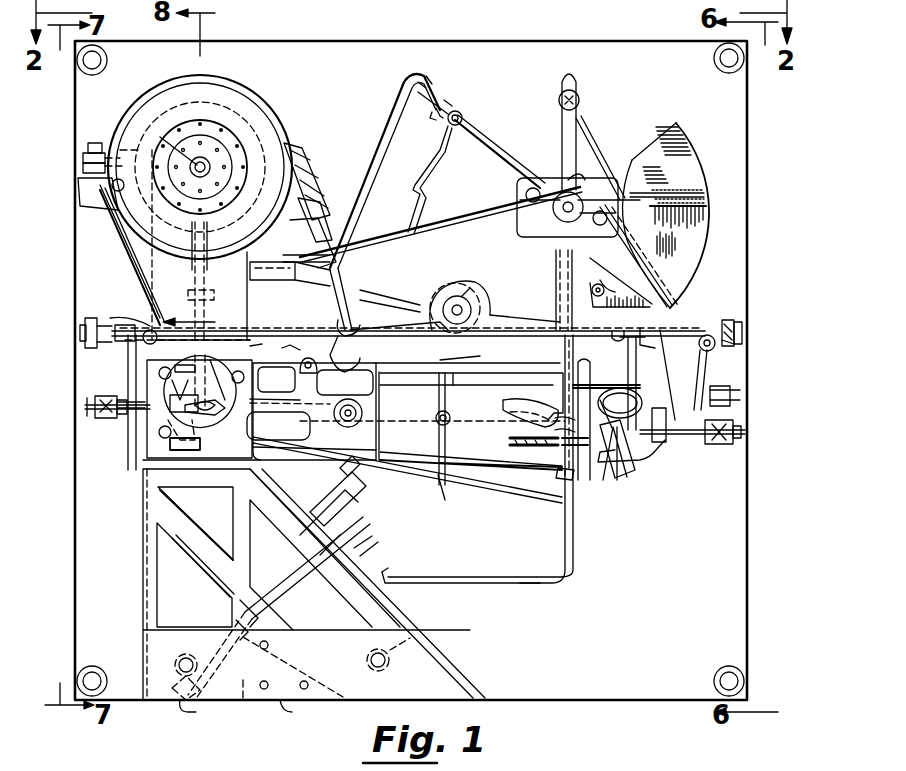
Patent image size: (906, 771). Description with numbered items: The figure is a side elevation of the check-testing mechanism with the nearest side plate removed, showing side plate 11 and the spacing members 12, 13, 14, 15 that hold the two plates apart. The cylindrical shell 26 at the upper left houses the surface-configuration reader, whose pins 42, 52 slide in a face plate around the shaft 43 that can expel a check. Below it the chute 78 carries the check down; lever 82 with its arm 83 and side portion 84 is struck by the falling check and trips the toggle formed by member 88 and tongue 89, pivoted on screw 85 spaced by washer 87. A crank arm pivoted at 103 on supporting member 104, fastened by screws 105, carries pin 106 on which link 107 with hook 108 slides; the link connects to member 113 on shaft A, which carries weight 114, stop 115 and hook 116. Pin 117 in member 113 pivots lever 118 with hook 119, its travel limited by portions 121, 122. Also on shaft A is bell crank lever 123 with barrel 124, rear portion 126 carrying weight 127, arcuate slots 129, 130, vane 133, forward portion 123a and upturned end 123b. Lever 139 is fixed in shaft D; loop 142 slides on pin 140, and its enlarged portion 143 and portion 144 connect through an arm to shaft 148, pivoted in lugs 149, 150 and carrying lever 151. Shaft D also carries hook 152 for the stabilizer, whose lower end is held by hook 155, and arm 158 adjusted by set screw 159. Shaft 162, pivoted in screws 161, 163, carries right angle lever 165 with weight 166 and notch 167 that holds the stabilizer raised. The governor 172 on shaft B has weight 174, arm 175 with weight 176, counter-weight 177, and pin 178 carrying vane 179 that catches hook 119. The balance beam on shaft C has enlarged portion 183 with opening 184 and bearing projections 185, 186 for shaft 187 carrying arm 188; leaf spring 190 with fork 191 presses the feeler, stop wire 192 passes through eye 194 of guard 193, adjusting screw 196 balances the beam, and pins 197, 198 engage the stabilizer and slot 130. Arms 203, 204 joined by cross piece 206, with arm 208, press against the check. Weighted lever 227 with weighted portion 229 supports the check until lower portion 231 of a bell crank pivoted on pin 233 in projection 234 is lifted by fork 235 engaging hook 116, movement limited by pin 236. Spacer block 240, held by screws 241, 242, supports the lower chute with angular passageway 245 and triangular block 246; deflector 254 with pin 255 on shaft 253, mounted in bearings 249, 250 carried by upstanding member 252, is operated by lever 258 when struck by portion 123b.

The side plate 11 is at (448, 48).
The spacing member 12 is at (718, 70).
The spacing member 13 is at (108, 60).
The spacing member 14 is at (100, 668).
The spacing member 15 is at (722, 666).
The cylindrical shell 26 is at (266, 96).
The pins 42 is at (190, 125).
The shaft 43 is at (172, 149).
The pins 52 is at (223, 163).
The chute 78 is at (152, 252).
The lever 82 is at (95, 200).
The downwardly projecting arm 83 is at (140, 265).
The sidewardly projecting portion 84 is at (150, 330).
The screw 85 is at (83, 170).
The space washer 87 is at (100, 148).
The toggle joint member 88 is at (83, 158).
The tongue 89 is at (90, 146).
The pivot 103 is at (285, 282).
The supporting member 104 is at (318, 215).
The screws 105 is at (306, 170).
The pin 106 is at (300, 288).
The link 107 is at (340, 238).
The hook 108 is at (296, 272).
The member 113 is at (350, 188).
The weight 114 is at (690, 268).
The stop 115 is at (598, 278).
The hook 116 is at (362, 312).
The pin 117 is at (462, 114).
The lever 118 is at (438, 92).
The hook 119 is at (425, 182).
The laterally projecting portion 121 is at (432, 80).
The laterally projecting portion 122 is at (425, 118).
The deflector operating member 123 is at (556, 360).
The forwardly projecting portion 123a is at (490, 585).
The upwardly projecting portion 123b is at (400, 568).
The barrel 124 is at (143, 336).
The rearwardly projecting portion 126 is at (630, 190).
The weight 127 is at (683, 165).
The arcuate slot 129 is at (638, 388).
The enlarged arcuate slot 130 is at (530, 400).
The vane 133 is at (556, 482).
The lever 139 is at (590, 150).
The pin 140 is at (578, 90).
The loop 142 is at (575, 78).
The enlarged portion 143 is at (520, 220).
The portion 144 is at (575, 262).
The shaft 148 is at (85, 318).
The lug 149 is at (85, 340).
The lug 150 is at (742, 326).
The lever 151 is at (128, 365).
The hook 152 is at (620, 295).
The hook 155 is at (618, 458).
The downwardly projecting arm 158 is at (708, 378).
The set screw 159 is at (740, 398).
The screw 161 is at (742, 432).
The shaft 162 is at (84, 418).
The screw 163 is at (85, 410).
The right angle lever 165 is at (642, 372).
The weight 166 is at (675, 386).
The notch 167 is at (648, 335).
The governor member 172 is at (455, 286).
The weight 174 is at (334, 128).
The arm 175 is at (515, 318).
The weight 176 is at (612, 470).
The counter-weight 177 is at (456, 358).
The pin 178 is at (410, 328).
The vane 179 is at (440, 282).
The enlarged portion 183 is at (152, 452).
The circular opening 184 is at (235, 348).
The bearing projection 185 is at (172, 362).
The bearing projection 186 is at (172, 455).
The shaft 187 is at (173, 394).
The arm 188 is at (186, 405).
The leaf spring member 190 is at (318, 398).
The fork 191 is at (205, 400).
The stop wire 192 is at (290, 448).
The guard 193 is at (446, 448).
The eye 194 is at (438, 485).
The adjusting screw 196 is at (530, 450).
The pin 197 is at (590, 355).
The pin 198 is at (531, 417).
The arm 203 is at (455, 380).
The arm 204 is at (470, 465).
The cross piece 206 is at (380, 448).
The arm 208 is at (122, 402).
The weighted lever 227 is at (406, 409).
The weighted portion 229 is at (348, 428).
The lower portion 231 is at (335, 378).
The pin 233 is at (287, 348).
The projection 234 is at (261, 348).
The fork 235 is at (360, 348).
The pin 236 is at (355, 368).
The spacer block 240 is at (140, 566).
The screw 241 is at (190, 650).
The screw 242 is at (440, 642).
The angularly disposed passageway 245 is at (305, 508).
The triangular shaped block 246 is at (303, 713).
The bearing member 249 is at (201, 700).
The bearing member 250 is at (362, 472).
The upstanding member 252 is at (370, 548).
The shaft 253 is at (300, 588).
The deflecting member 254 is at (195, 560).
The pin 255 is at (190, 545).
The pivoted lever 258 is at (380, 556).